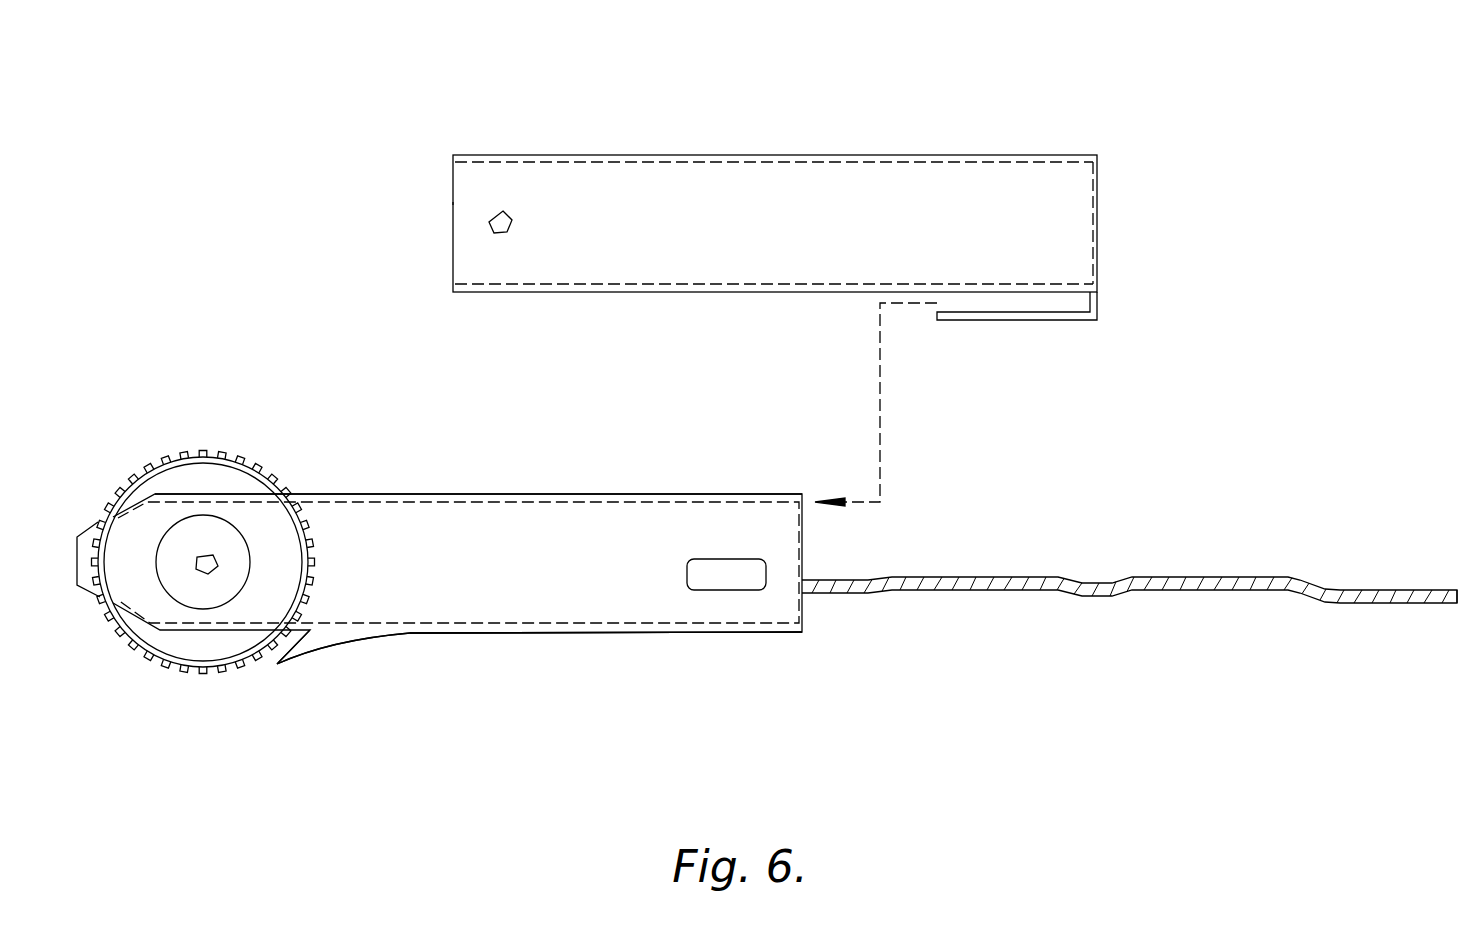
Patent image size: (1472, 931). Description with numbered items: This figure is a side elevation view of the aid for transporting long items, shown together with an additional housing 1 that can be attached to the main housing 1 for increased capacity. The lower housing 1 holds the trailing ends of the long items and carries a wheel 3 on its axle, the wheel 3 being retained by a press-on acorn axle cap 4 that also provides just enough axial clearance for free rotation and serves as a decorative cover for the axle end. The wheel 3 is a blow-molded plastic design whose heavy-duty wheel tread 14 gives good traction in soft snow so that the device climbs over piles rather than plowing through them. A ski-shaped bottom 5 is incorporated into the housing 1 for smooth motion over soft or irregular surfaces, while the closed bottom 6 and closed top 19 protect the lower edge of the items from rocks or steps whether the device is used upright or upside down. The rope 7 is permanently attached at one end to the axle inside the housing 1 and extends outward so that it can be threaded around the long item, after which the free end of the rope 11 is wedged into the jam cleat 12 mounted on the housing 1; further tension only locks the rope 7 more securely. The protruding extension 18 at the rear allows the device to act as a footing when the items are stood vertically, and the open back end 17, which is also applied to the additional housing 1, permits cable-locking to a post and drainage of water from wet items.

The housing 1 is at (1025, 225).
The wheel 3 is at (217, 643).
The axle cap 4 is at (503, 211).
The ski-shaped bottom 5 is at (388, 637).
The closed bottom 6 is at (763, 632).
The rope 7 is at (1098, 595).
The free end of the rope 11 is at (1420, 603).
The jam cleat 12 is at (737, 577).
The wheel tread 14 is at (263, 468).
The open back end 17 is at (453, 202).
The protruding extension 18 is at (78, 585).
The closed top 19 is at (680, 493).